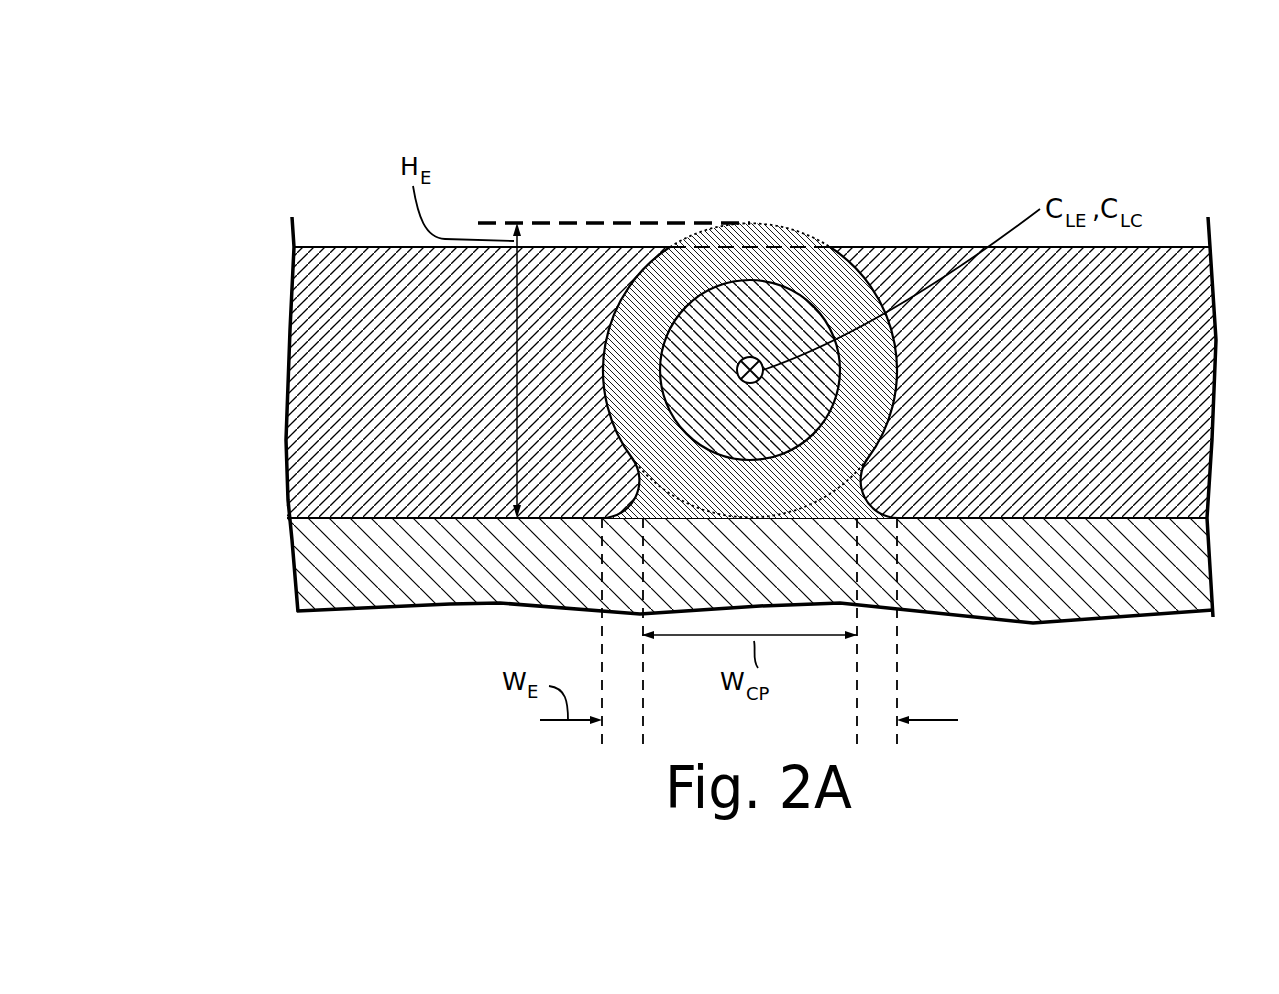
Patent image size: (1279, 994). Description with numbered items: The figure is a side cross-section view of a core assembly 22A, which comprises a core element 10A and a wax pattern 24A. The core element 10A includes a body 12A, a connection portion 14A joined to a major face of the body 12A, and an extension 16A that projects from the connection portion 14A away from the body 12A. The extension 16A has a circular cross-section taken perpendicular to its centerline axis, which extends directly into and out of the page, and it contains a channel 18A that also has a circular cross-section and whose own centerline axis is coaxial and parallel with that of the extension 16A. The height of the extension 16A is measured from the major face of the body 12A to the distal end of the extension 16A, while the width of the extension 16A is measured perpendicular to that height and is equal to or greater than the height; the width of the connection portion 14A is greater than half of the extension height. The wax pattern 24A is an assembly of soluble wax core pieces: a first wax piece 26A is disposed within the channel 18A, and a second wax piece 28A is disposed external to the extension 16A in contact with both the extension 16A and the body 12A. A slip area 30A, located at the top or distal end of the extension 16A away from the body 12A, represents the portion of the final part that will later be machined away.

The core element 10A is at (690, 369).
The body 12A is at (998, 578).
The connection portion 14A is at (643, 497).
The extension 16A is at (667, 283).
The channel 18A is at (817, 308).
The core assembly 22A is at (718, 336).
The wax pattern 24A is at (936, 244).
The first wax piece 26A is at (385, 304).
The second wax piece 28A is at (720, 426).
The slip area 30A is at (791, 226).